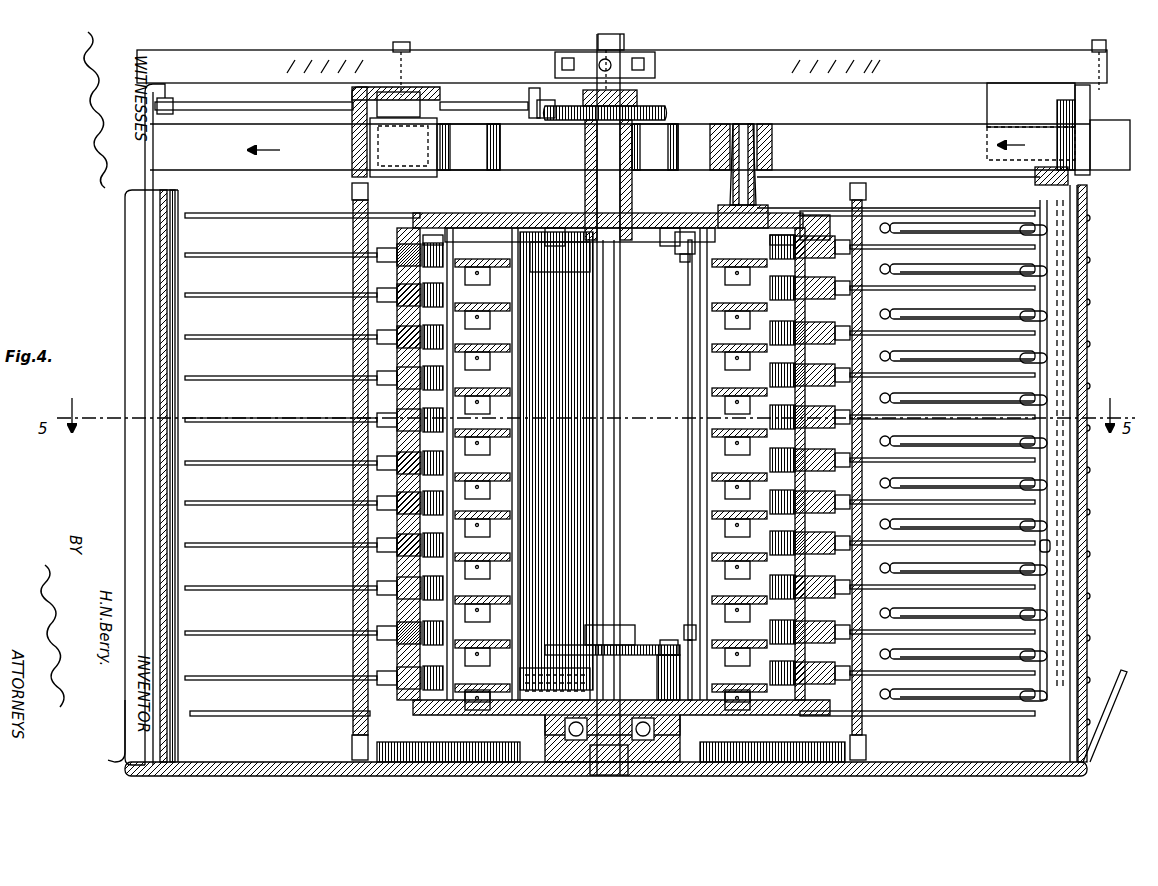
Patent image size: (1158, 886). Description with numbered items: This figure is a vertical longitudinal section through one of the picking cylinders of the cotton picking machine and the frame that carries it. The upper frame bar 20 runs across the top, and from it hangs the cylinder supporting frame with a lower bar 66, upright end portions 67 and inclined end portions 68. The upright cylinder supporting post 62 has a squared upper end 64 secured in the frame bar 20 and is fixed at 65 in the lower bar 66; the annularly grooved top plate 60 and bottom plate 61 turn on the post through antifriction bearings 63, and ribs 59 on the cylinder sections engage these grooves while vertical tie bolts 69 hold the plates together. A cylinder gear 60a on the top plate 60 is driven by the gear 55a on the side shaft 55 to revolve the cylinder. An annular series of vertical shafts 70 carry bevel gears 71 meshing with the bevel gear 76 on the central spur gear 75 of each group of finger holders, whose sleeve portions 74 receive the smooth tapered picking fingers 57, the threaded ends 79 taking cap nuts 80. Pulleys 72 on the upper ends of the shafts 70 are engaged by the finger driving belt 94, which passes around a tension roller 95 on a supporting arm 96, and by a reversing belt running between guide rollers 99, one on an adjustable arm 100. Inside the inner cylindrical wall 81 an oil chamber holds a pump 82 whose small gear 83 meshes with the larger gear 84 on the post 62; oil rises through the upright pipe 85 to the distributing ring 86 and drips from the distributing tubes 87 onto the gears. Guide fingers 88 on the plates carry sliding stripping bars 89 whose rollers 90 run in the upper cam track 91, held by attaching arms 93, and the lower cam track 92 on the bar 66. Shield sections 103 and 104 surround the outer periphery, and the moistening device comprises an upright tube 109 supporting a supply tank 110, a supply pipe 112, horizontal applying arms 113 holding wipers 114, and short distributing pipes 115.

The upper frame bar 20 is at (800, 58).
The side shaft 55 is at (233, 113).
The side shaft gear 55a is at (548, 92).
The picking finger 57 is at (262, 377).
The rib 59 is at (415, 238).
The top plate 60 is at (540, 272).
The cylinder gear 60a is at (668, 114).
The bottom plate 61 is at (545, 720).
The cylinder supporting post 62 is at (622, 345).
The antifriction bearing 63 is at (565, 790).
The squared upper end 64 is at (615, 50).
The lower end fixing 65 is at (620, 770).
The lower bar 66 is at (790, 775).
The upright end portion 67 is at (150, 483).
The inclined end portion 68 is at (1120, 685).
The tie bolt 69 is at (455, 453).
The vertical shaft 70 is at (480, 372).
The bevel gear 71 is at (710, 403).
The pulley 72 is at (798, 112).
The sleeve portion 74 is at (805, 455).
The spur gear 75 is at (400, 430).
The bevel gear 76 is at (400, 445).
The externally threaded outer end 79 is at (815, 381).
The cap nut 80 is at (828, 380).
The inner cylindrical wall 81 is at (528, 527).
The pump 82 is at (665, 640).
The small gear 83 is at (686, 625).
The larger gear 84 is at (565, 645).
The upright pipe 85 is at (690, 525).
The distributing ring 86 is at (680, 255).
The distributing tube 87 is at (775, 213).
The guide finger 88 is at (270, 213).
The stripping bar 89 is at (866, 303).
The guide roller 90 is at (868, 190).
The upper cam track 91 is at (352, 168).
The lower cam track 92 is at (395, 772).
The attaching arm 93 is at (355, 132).
The finger driving belt 94 is at (915, 128).
The tension roller 95 is at (1122, 168).
The supporting arm 96 is at (1109, 74).
The guide roller 99 is at (430, 130).
The adjustable arm 100 is at (637, 98).
The forward shield section 103 is at (1080, 553).
The rear shield section 104 is at (132, 276).
The upright tube 109 is at (1042, 512).
The supply tank 110 is at (1031, 126).
The supply pipe 112 is at (1045, 548).
The moisture applying arm 113 is at (985, 362).
The wiper 114 is at (978, 410).
The distributing pipe 115 is at (1035, 612).